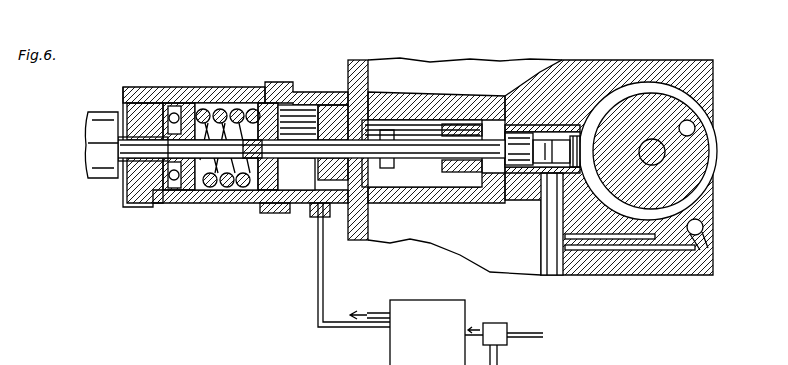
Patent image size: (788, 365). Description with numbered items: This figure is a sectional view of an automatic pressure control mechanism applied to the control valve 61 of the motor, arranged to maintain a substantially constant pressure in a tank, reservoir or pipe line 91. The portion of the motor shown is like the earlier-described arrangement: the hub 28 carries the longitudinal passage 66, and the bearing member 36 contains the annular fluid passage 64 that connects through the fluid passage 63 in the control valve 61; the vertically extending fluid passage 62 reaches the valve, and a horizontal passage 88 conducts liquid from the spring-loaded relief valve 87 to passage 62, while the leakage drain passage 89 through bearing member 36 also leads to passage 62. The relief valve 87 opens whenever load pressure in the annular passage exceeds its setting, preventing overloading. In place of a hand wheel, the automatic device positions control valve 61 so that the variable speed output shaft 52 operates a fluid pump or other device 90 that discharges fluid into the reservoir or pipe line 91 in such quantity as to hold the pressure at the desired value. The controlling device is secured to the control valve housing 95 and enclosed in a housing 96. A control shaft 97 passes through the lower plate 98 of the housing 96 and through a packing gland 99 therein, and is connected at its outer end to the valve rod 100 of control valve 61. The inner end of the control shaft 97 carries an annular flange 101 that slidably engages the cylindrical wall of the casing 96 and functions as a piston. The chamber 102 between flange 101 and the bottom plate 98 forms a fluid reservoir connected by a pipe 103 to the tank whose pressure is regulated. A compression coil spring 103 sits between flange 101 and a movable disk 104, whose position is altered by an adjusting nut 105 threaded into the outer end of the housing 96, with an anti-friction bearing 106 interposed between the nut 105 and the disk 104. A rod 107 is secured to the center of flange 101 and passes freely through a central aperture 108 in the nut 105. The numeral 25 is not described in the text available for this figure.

The line 25 is at (59, 361).
The hub 28 is at (648, 100).
The bearing member 36 is at (672, 78).
The variable speed output shaft 52 is at (660, 155).
The control valve 61 is at (520, 140).
The fluid passage 62 is at (545, 212).
The fluid passage 63 is at (558, 140).
The annular fluid passage 64 is at (692, 100).
The passage 66 is at (690, 128).
The relief valve 87 is at (703, 232).
The passage 88 is at (632, 251).
The passage 89 is at (590, 240).
The fluid pump or other device 90 is at (497, 328).
The reservoir, tank or pipe line 91 is at (426, 312).
The control valve housing 95 is at (400, 97).
The housing 96 is at (218, 92).
The control shaft 97 is at (330, 128).
The lower plate 98 is at (352, 62).
The packing gland 99 is at (296, 184).
The valve rod 100 is at (410, 150).
The annular flange 101 is at (258, 88).
The chamber 102 is at (288, 192).
The pipe / compression coil spring 103 is at (230, 182).
The movable disk 104 is at (195, 185).
The adjusting nut 105 is at (128, 185).
The anti-friction bearing 106 is at (175, 108).
The rod 107 is at (168, 153).
The central aperture 108 is at (100, 150).